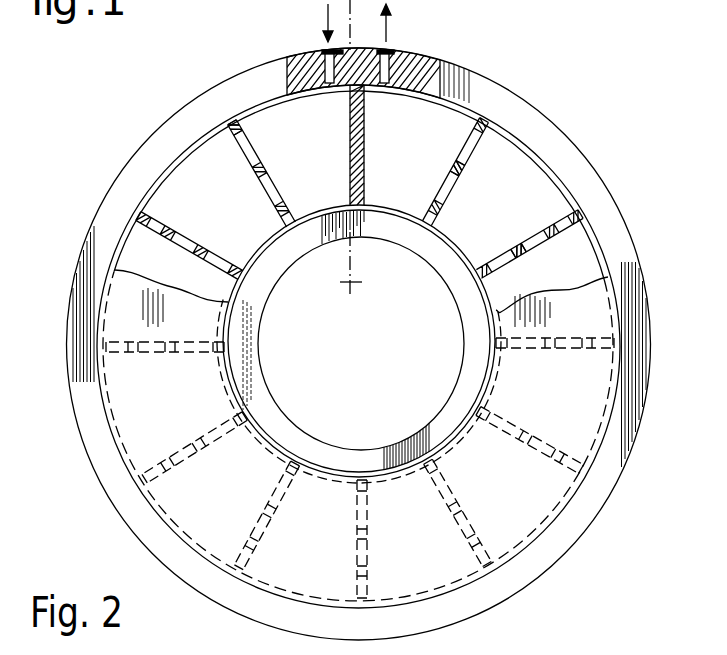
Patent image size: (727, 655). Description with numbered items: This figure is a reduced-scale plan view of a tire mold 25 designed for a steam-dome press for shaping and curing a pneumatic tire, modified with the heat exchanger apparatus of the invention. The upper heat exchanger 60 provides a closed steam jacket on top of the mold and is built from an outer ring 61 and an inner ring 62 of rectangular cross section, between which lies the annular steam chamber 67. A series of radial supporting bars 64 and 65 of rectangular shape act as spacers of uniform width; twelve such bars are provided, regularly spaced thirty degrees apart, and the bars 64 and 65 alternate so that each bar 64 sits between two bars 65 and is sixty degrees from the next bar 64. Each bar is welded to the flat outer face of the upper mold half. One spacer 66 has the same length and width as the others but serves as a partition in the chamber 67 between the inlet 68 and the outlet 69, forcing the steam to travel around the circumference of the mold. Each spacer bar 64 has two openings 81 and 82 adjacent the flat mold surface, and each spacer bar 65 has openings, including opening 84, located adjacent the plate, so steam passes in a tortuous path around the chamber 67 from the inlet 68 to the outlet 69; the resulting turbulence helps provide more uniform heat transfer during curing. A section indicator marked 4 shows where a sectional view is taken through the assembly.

The section line 4- 4 is at (362, 282).
The tire mold 25 is at (585, 128).
The upper heat exchanger 60 is at (100, 213).
The outer ring 61 is at (105, 462).
The inner ring 62 is at (463, 383).
The radial supporting bars 64 is at (277, 203).
The radial supporting bars 65 is at (198, 255).
The partition spacer 66 is at (364, 133).
The annular steam chamber 67 is at (314, 141).
The inlet 68 is at (308, 62).
The outlet 69 is at (395, 68).
The opening 81 is at (241, 152).
The opening 82 is at (438, 191).
The opening 84 is at (533, 240).